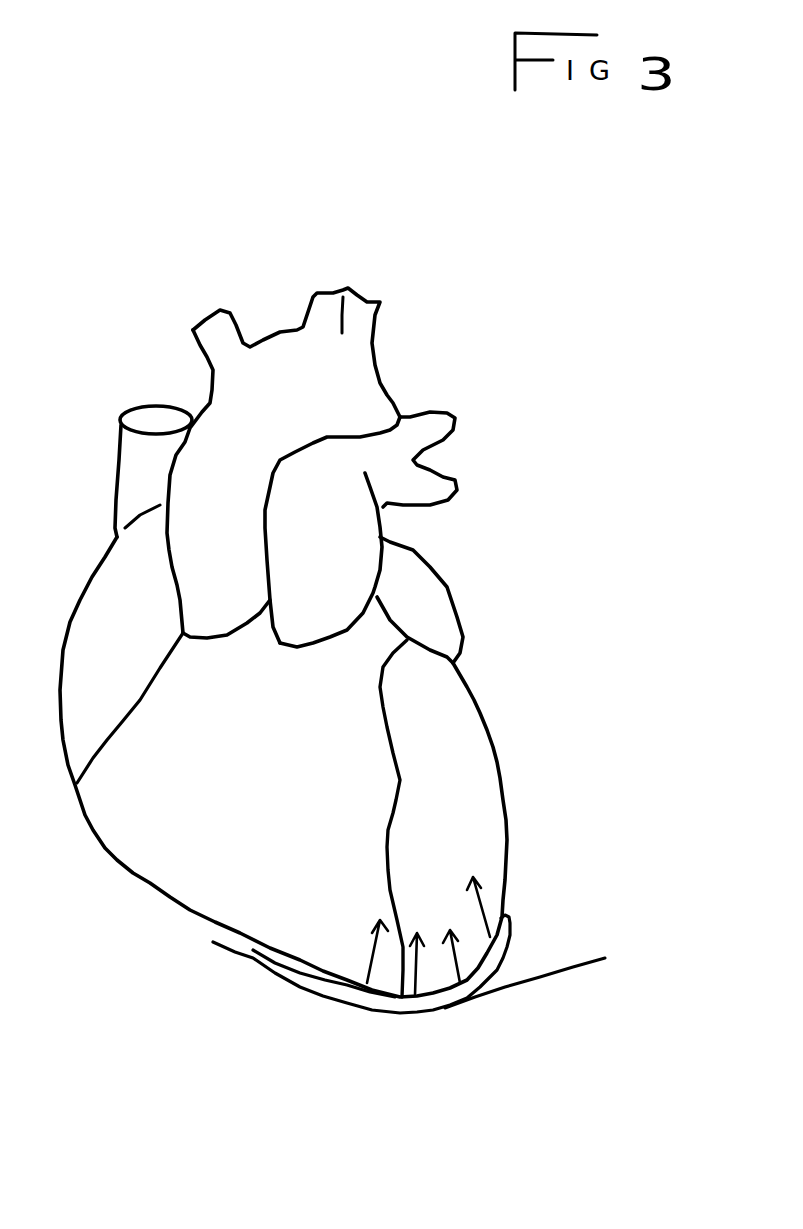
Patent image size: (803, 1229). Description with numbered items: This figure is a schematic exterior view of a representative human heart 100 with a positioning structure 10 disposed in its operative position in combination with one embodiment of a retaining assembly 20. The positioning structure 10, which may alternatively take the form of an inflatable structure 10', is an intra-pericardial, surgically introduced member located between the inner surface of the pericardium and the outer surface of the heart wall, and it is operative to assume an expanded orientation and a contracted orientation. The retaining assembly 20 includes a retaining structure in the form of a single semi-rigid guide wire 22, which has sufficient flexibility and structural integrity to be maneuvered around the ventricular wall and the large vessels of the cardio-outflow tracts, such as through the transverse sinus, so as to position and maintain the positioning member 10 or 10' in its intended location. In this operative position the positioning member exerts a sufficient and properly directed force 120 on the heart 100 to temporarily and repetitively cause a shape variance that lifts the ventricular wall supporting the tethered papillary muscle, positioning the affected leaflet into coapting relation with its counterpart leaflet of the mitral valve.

The heart 100 is at (505, 515).
The force 120 is at (447, 887).
The positioning structure 10 is at (523, 912).
The inflatable structure 10' is at (478, 907).
The guide wire 22 is at (578, 965).
The retaining assembly 20 is at (558, 1003).